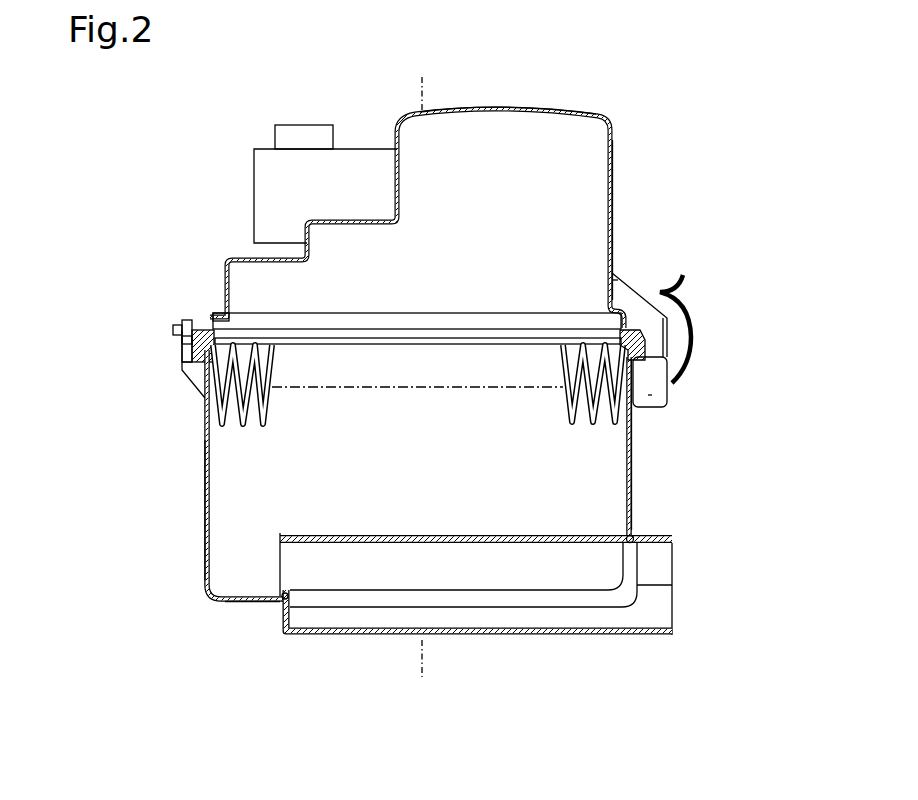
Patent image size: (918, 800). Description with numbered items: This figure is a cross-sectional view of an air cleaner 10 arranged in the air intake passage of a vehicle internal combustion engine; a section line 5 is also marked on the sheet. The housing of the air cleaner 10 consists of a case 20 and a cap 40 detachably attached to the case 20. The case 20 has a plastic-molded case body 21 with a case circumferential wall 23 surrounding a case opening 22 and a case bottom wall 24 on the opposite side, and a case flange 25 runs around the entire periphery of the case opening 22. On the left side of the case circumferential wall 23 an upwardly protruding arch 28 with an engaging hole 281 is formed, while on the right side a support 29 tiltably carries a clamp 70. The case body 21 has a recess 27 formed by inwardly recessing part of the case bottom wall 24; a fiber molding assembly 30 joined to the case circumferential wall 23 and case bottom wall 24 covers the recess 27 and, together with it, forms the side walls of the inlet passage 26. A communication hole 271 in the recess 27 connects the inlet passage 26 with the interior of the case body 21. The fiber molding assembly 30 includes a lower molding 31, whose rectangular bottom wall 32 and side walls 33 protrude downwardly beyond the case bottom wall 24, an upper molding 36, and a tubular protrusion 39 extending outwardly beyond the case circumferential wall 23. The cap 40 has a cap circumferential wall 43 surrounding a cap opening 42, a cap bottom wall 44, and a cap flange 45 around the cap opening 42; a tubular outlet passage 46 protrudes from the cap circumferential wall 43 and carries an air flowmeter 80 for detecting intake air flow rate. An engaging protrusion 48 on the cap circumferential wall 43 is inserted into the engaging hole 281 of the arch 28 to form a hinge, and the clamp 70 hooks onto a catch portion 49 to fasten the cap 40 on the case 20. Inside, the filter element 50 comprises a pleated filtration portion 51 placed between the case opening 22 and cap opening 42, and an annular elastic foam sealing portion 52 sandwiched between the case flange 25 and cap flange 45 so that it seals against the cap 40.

The section line V-V 5 is at (422, 77).
The air cleaner 10 is at (191, 127).
The case 20 is at (196, 609).
The case body 21 is at (201, 551).
The case opening 22 is at (612, 427).
The case circumferential wall 23 is at (633, 462).
The case bottom wall 24 is at (245, 607).
The case flange 25 is at (643, 377).
The inlet passage 26 is at (472, 568).
The recess 27 is at (412, 545).
The communication hole 271 is at (279, 547).
The arch 28 is at (185, 320).
The engaging hole 281 is at (182, 340).
The support 29 is at (650, 397).
The fiber molding assembly 30 is at (730, 558).
The lower molding 31 is at (676, 604).
The bottom wall 32 is at (492, 636).
The side wall 33 is at (547, 620).
The upper molding 36 is at (676, 565).
The tubular protrusion 39 is at (653, 528).
The cap 40 is at (614, 121).
The cap opening 42 is at (225, 320).
The cap circumferential wall 43 is at (613, 181).
The cap bottom wall 44 is at (512, 107).
The cap flange 45 is at (640, 322).
The outlet passage 46 is at (362, 147).
The engaging protrusion 48 is at (175, 326).
The catch portion 49 is at (641, 304).
The filter element 50 is at (118, 370).
The filtration portion 51 is at (237, 437).
The sealing portion 52 is at (193, 352).
The clamp 70 is at (692, 344).
The air flowmeter 80 is at (305, 125).